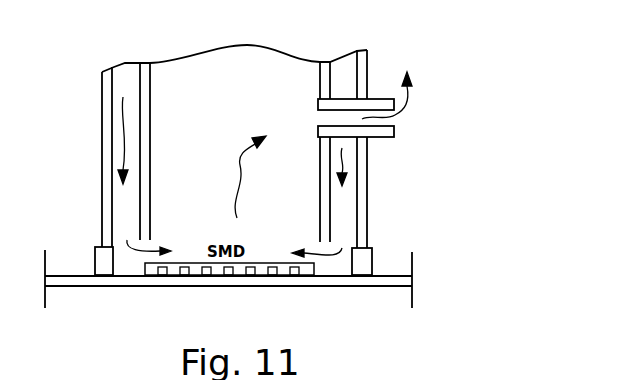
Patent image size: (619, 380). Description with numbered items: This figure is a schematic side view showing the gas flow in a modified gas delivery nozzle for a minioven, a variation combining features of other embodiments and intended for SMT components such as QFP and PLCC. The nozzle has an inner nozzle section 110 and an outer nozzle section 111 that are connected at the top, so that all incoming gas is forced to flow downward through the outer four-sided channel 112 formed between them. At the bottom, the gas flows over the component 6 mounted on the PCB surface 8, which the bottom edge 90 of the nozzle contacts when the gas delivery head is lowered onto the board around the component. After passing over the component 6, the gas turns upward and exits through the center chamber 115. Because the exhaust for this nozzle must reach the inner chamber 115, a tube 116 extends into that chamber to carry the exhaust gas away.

The inner nozzle section 110 is at (146, 96).
The outer nozzle section 111 is at (108, 122).
The outer 4-sided channel 112 is at (125, 198).
The center chamber 115 is at (245, 103).
The tube 116 is at (381, 140).
The bottom edge 90 is at (367, 263).
The PCB surface 8 is at (323, 278).
The component 6 is at (260, 276).